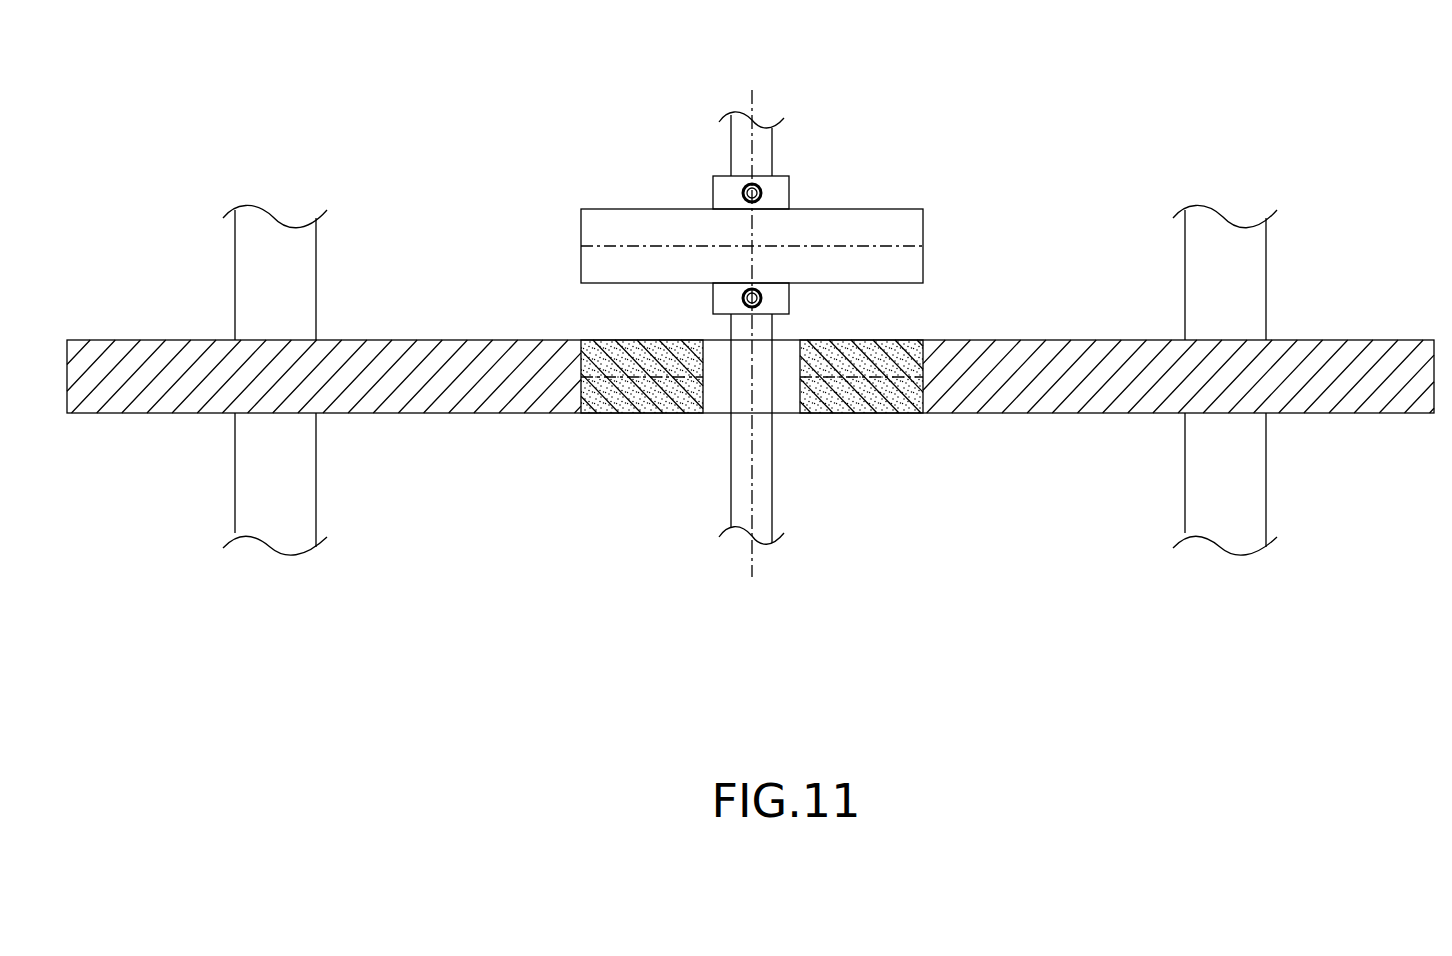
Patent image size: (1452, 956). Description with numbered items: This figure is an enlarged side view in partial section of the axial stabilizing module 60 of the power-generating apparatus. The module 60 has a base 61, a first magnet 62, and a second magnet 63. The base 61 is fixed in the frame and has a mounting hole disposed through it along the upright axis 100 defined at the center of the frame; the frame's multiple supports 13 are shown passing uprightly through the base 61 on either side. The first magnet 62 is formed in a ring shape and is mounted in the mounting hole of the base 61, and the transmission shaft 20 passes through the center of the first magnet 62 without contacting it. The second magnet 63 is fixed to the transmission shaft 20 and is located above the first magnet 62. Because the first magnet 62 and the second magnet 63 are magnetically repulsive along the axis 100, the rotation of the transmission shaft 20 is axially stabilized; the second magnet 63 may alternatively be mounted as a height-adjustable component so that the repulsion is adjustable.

The axis 100 is at (756, 106).
The supports 13 is at (253, 275).
The transmission shaft 20 is at (737, 475).
The axial stabilizing module 60 is at (1062, 213).
The base 61 is at (1071, 405).
The first magnet 62 is at (882, 412).
The second magnet 63 is at (895, 218).